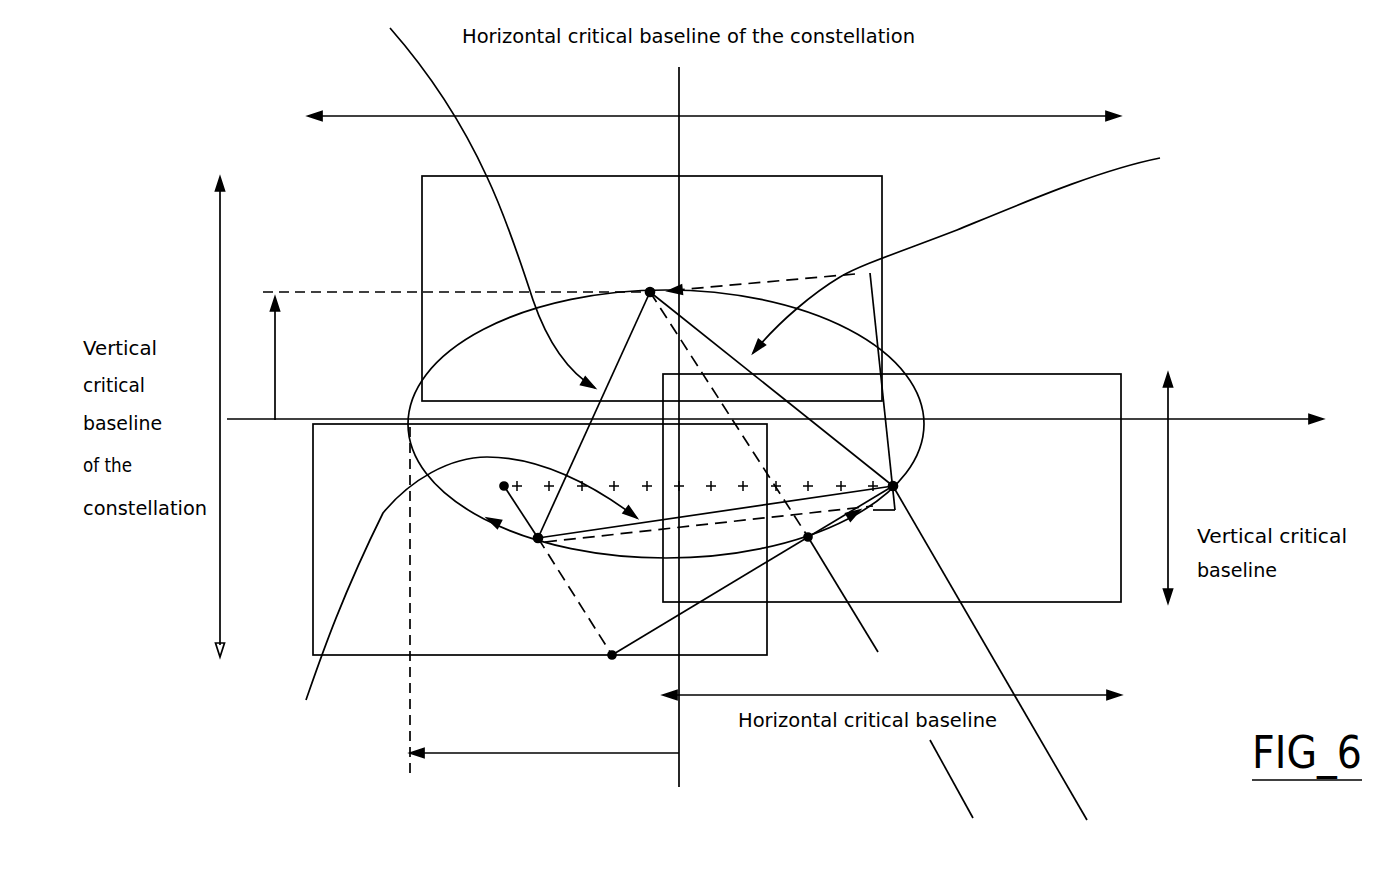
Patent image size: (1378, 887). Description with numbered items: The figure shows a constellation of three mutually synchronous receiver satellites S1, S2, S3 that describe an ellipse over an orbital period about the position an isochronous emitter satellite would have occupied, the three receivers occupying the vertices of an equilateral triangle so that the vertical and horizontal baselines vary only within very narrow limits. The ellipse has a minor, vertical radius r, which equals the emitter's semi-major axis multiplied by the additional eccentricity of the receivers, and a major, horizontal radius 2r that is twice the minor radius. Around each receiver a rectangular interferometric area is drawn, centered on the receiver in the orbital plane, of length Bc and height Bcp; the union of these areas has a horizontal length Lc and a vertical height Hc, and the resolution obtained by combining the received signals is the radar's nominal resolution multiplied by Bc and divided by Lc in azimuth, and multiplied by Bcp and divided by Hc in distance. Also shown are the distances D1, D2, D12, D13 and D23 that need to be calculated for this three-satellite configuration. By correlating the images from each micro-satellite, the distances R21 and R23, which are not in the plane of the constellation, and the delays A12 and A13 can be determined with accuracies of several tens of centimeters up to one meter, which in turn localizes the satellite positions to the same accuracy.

The receiver satellite S1 is at (715, 396).
The receiver satellite S2 is at (736, 510).
The receiver satellite S3 is at (536, 559).
The distance D1 is at (761, 263).
The distance D2 is at (709, 531).
The distance D12 is at (980, 250).
The distance D13 is at (476, 194).
The distance D23 is at (464, 600).
The distance R21 is at (723, 414).
The distance R23 is at (575, 596).
The delay A12 is at (812, 461).
The delay A13 is at (633, 466).
The length of the union of the interferometric areas Lc is at (714, 104).
The height of the union of the interferometric areas Hc is at (204, 417).
The length of the interferometric area Bc is at (892, 679).
The height of the interferometric area Bcp is at (1188, 488).
The minor radius of the ellipse r is at (283, 358).
The major radius of the ellipse 2r is at (544, 743).